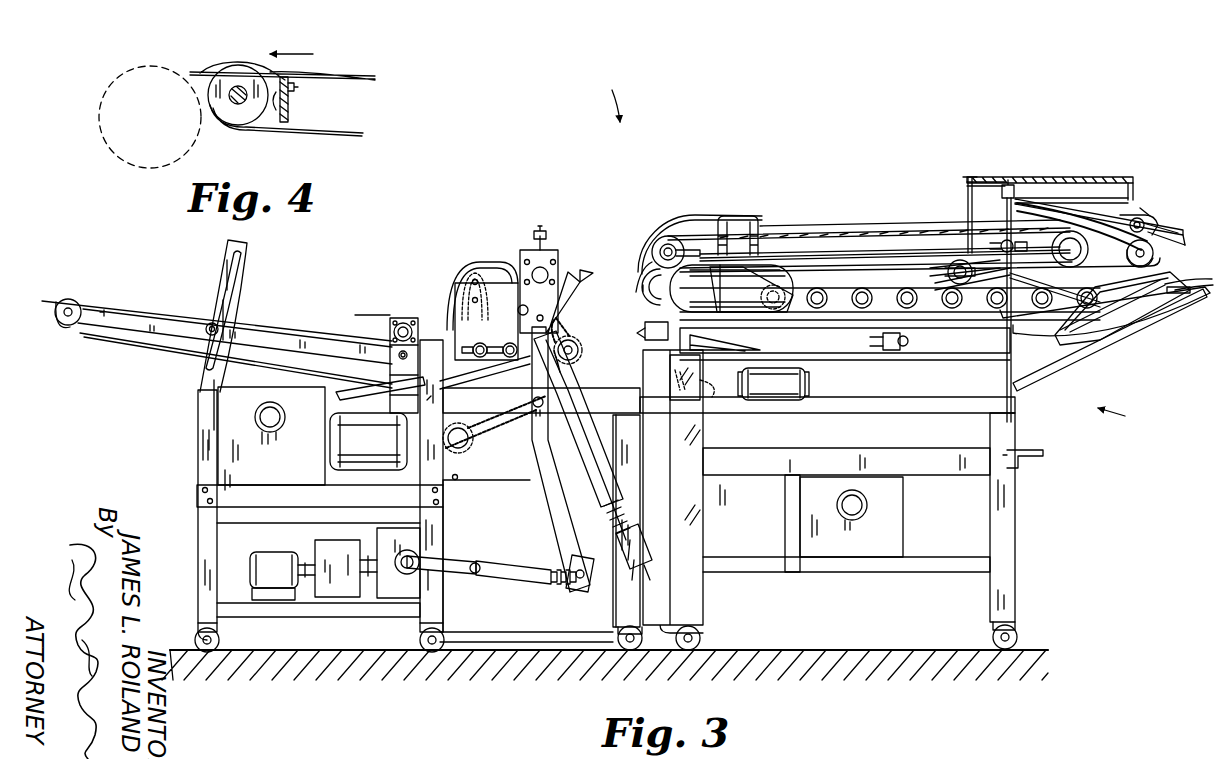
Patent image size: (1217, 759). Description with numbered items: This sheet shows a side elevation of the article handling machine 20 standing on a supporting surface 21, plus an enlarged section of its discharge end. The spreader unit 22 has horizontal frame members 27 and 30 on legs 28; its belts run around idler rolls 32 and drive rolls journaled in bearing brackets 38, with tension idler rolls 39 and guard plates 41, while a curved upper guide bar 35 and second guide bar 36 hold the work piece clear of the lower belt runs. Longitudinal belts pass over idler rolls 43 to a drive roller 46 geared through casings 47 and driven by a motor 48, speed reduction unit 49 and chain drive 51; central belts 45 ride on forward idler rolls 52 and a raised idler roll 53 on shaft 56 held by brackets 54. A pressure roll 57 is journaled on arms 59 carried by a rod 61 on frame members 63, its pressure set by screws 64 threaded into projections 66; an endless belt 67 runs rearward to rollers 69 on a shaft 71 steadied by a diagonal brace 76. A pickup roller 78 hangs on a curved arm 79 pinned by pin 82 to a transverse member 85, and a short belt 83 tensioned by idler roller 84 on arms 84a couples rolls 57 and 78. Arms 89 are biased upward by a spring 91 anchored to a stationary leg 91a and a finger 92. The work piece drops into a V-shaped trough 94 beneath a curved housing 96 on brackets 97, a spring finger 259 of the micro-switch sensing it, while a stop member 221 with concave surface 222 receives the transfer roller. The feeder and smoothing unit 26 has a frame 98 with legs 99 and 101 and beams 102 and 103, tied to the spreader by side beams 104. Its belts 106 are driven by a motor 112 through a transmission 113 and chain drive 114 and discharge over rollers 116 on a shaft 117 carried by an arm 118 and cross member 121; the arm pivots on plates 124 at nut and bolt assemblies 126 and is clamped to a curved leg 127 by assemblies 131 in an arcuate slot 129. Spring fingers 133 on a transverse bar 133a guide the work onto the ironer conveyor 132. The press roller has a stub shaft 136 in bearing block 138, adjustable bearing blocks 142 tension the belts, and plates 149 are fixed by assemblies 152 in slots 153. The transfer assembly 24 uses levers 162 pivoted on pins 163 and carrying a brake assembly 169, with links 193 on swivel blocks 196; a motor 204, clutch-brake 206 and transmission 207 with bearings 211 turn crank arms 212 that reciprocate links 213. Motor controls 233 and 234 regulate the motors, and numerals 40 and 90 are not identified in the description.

In FIG. 3, the article handling machine 20 is at (602, 97).
In FIG. 3, the supporting surface 21 is at (840, 648).
In FIG. 3, the spreader unit 22 is at (1122, 419).
In FIG. 3, the work piece transfer assembly 24 is at (603, 228).
In FIG. 3, the feeder and smoothing unit 26 is at (360, 320).
In FIG. 3, the horizontal frame members 27 is at (840, 354).
In FIG. 3, the legs 28 is at (1016, 504).
In FIG. 3, the horizontal frame member 30 is at (925, 455).
In FIG. 3, the idler rolls 32 is at (1183, 276).
In FIG. 3, the curved upper guide bar 35 is at (1196, 280).
In FIG. 3, the second curved guide bar 36 is at (1178, 337).
In FIG. 3, the bearing brackets 38 is at (746, 340).
In FIG. 3, the idler rolls 39 is at (893, 352).
In FIG. 3, the drive unit 40 is at (910, 341).
In FIG. 3, the guard plates 41 is at (751, 289).
In FIG. 3, the idler roll 43 is at (815, 310).
In FIG. 3, the central conveyer belts 45 is at (1115, 297).
In FIG. 3, the drive roller 46 is at (650, 292).
In FIG. 3, the casings 47 is at (668, 276).
In FIG. 3, the D.C. electric motor 48 is at (806, 384).
In FIG. 3, the speed reduction unit 49 is at (692, 377).
In FIG. 3, the chain and sprocket drive 51 is at (742, 380).
In FIG. 3, the forward idler rolls 52 is at (1093, 312).
In FIG. 3, the idler roll 53 is at (948, 266).
In FIG. 3, the brackets 54 is at (962, 314).
In FIG. 3, the transverse shaft 56 is at (958, 262).
In FIG. 3, the pressure roll 57 is at (1100, 213).
In FIG. 3, the arms 59 is at (1070, 249).
In FIG. 3, the rod 61 is at (971, 177).
In FIG. 3, the upwardly extended frame members 63 is at (1030, 388).
In FIG. 3, the adjustable screws 64 is at (1020, 240).
In FIG. 3, the lateral projection 66 is at (1028, 244).
In FIG. 3, the endless belt 67 is at (832, 230).
In FIG. 3, the rollers 69 is at (668, 236).
In FIG. 3, the transverse shaft 71 is at (655, 242).
In FIG. 3, the diagonal brace 76 is at (882, 248).
In FIG. 3, the work piece pickup roller 78 is at (1156, 258).
In FIG. 3, the downwardly curved arm 79 is at (1134, 220).
In FIG. 3, the pin 82 is at (1013, 185).
In FIG. 3, the short longitudinal belt 83 is at (1160, 228).
In FIG. 3, the idler roller 84 is at (1150, 215).
In FIG. 3, the arms 84a is at (1142, 209).
In FIG. 3, the transverse member 85 is at (1097, 198).
In FIG. 3, the arms 89 is at (1172, 236).
In FIG. 3, the link end 90 is at (1189, 242).
In FIG. 3, the spring 91 is at (1080, 176).
In FIG. 3, the stationary leg 91a is at (967, 180).
In FIG. 3, the finger 92 is at (1143, 223).
In FIG. 3, the V-shaped trough 94 is at (704, 532).
In FIG. 3, the downwardly curved housing 96 is at (640, 258).
In FIG. 3, the bracket members 97 is at (740, 214).
In FIG. 3, the frame 98 is at (195, 408).
In FIG. 3, the legs 99 is at (612, 441).
In FIG. 3, the legs 101 is at (445, 530).
In FIG. 3, the horizontal beam 102 is at (600, 389).
In FIG. 3, the horizontal beam 103 is at (405, 563).
In FIG. 3, the side beams 104 is at (930, 397).
In FIG. 4, the endless belts 106 is at (340, 72).
In FIG. 3, the endless belts 106 is at (138, 308).
In FIG. 3, the D.C. electric motor 112 is at (368, 441).
In FIG. 3, the power transmission mechanism 113 is at (445, 496).
In FIG. 3, the chain and sprocket drive assembly 114 is at (487, 440).
In FIG. 4, the rollers 116 is at (228, 112).
In FIG. 3, the rollers 116 is at (68, 325).
In FIG. 4, the transverse shaft 117 is at (240, 105).
In FIG. 3, the transverse shaft 117 is at (70, 300).
In FIG. 3, the arm 118 is at (297, 334).
In FIG. 4, the transverse cross member 121 is at (292, 116).
In FIG. 3, the horizontal plates 124 is at (430, 338).
In FIG. 3, the nut and bolt assemblies 126 is at (393, 358).
In FIG. 3, the curved leg 127 is at (248, 244).
In FIG. 3, the arcuate-shaped slot 129 is at (238, 273).
In FIG. 3, the nut and bolt assemblies 131 is at (218, 327).
In FIG. 4, the ironer conveyor 132 is at (104, 146).
In FIG. 4, the spring fingers 133 is at (192, 72).
In FIG. 4, the transverse bar 133a is at (275, 115).
In FIG. 3, the stub shaft 136 is at (405, 320).
In FIG. 3, the bearing block 138 is at (392, 317).
In FIG. 3, the vertically adjustable bearing blocks 142 is at (441, 434).
In FIG. 3, the upwardly extended plate 149 is at (452, 278).
In FIG. 3, the nut and bolt assemblies 152 is at (508, 358).
In FIG. 3, the longitudinally extended slots 153 is at (508, 343).
In FIG. 3, the lever 162 is at (530, 472).
In FIG. 3, the pin 163 is at (537, 410).
In FIG. 3, the continuous brake assembly 169 is at (540, 229).
In FIG. 3, the links 193 is at (585, 386).
In FIG. 3, the swivel blocks 196 is at (638, 524).
In FIG. 3, the motor 204 is at (265, 592).
In FIG. 3, the electromagnetic clutch-brake 206 is at (335, 600).
In FIG. 3, the power transmission 207 is at (380, 537).
In FIG. 3, the bearings 211 is at (405, 602).
In FIG. 3, the crank arms 212 is at (470, 558).
In FIG. 3, the links 213 is at (506, 565).
In FIG. 3, the transverse stop member 221 is at (644, 336).
In FIG. 3, the concave surface 222 is at (645, 328).
In FIG. 3, the D.C. motor control 233 is at (844, 523).
In FIG. 3, the D.C. motor control 234 is at (271, 436).
In FIG. 3, the spring finger 259 is at (1040, 288).